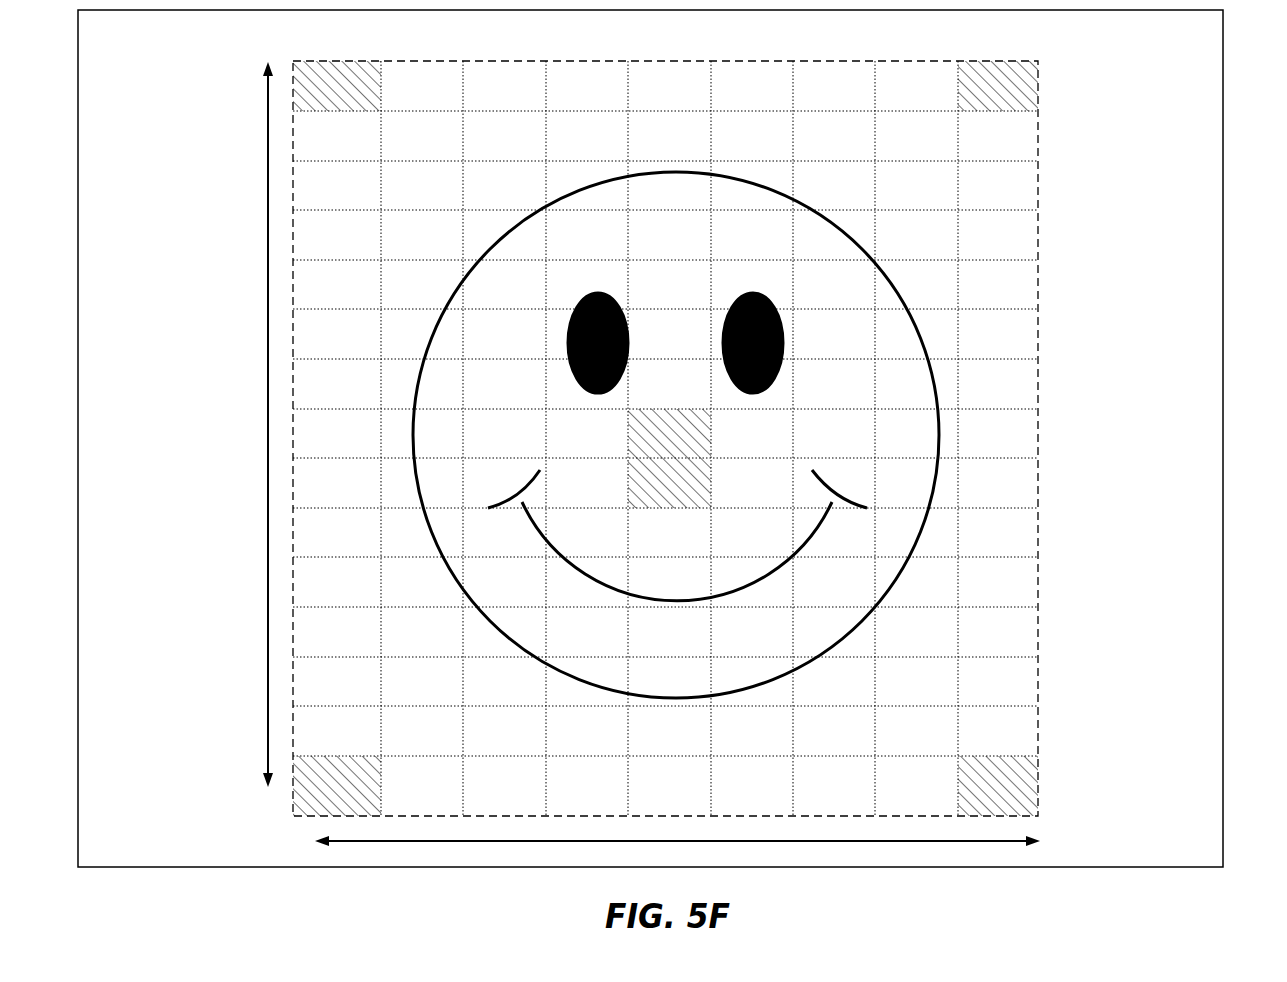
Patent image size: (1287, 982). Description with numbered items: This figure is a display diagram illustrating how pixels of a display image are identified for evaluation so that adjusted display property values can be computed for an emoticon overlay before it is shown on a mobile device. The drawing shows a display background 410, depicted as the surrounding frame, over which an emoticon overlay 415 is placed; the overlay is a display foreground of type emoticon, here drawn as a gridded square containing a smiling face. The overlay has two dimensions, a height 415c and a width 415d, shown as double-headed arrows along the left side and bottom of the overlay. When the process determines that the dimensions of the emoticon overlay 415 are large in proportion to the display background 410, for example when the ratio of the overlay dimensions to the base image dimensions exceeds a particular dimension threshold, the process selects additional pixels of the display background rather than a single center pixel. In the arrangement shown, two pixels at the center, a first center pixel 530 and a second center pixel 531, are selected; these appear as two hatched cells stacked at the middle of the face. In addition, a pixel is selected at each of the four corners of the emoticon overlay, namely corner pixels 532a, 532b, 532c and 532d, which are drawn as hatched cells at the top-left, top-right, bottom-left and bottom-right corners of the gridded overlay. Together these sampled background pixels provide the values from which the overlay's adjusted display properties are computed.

The display background 410 is at (1223, 90).
The emoticon overlay 415 is at (1040, 140).
The emoticon overlay dimension 415c is at (230, 424).
The emoticon overlay dimension 415d is at (677, 862).
The center pixel 530 is at (678, 432).
The second center pixel 531 is at (705, 478).
The corner pixel 532a is at (363, 62).
The corner pixel 532b is at (1030, 80).
The corner pixel 532c is at (296, 790).
The corner pixel 532d is at (1036, 782).